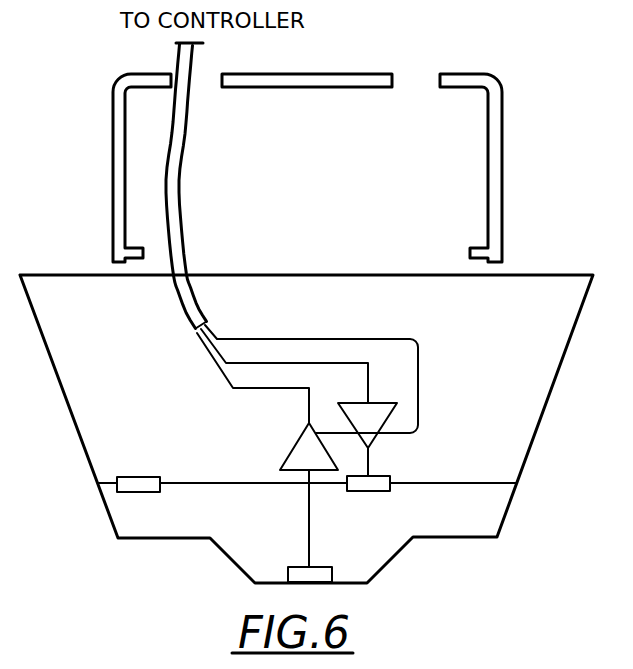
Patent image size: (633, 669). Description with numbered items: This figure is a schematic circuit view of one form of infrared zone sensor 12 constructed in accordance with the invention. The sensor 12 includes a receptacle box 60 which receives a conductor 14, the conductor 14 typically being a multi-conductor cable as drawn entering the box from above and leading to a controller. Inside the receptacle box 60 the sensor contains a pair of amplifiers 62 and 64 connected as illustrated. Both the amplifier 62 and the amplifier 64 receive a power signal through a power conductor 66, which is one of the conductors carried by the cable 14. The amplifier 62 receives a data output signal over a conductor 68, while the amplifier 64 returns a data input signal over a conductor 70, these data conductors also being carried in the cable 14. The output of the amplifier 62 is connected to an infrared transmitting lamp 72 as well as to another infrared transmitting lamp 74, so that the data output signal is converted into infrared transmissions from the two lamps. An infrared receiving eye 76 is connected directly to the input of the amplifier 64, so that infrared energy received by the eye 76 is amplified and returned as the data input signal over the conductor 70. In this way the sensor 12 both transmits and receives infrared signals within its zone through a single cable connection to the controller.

The sensor 12 is at (556, 190).
The conductor 14 is at (191, 80).
The receptacle box 60 is at (343, 76).
The amplifier 62 is at (380, 424).
The amplifier 64 is at (298, 454).
The power conductor 66 is at (369, 338).
The conductor 68 is at (368, 376).
The conductor 70 is at (275, 390).
The infrared transmitting lamp 72 is at (383, 476).
The infrared transmitting lamp 74 is at (148, 481).
The infrared receiving eye 76 is at (326, 568).